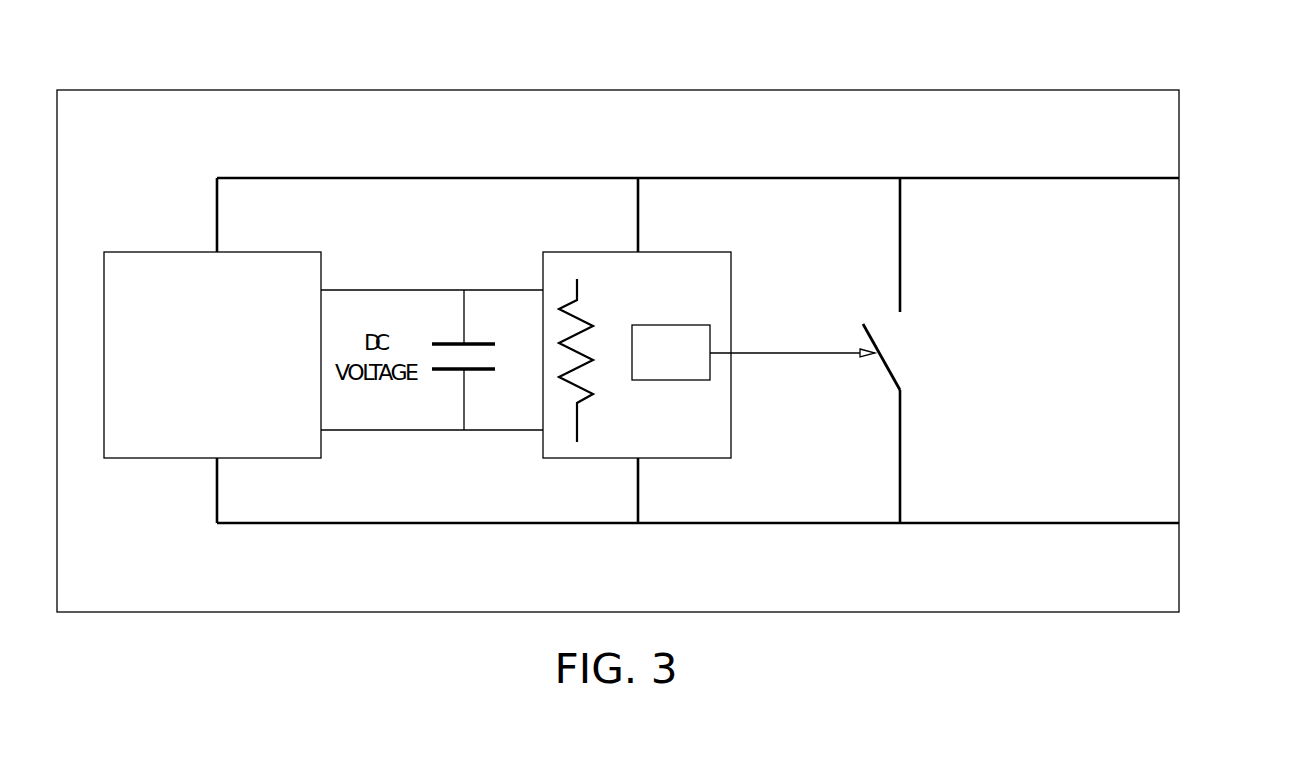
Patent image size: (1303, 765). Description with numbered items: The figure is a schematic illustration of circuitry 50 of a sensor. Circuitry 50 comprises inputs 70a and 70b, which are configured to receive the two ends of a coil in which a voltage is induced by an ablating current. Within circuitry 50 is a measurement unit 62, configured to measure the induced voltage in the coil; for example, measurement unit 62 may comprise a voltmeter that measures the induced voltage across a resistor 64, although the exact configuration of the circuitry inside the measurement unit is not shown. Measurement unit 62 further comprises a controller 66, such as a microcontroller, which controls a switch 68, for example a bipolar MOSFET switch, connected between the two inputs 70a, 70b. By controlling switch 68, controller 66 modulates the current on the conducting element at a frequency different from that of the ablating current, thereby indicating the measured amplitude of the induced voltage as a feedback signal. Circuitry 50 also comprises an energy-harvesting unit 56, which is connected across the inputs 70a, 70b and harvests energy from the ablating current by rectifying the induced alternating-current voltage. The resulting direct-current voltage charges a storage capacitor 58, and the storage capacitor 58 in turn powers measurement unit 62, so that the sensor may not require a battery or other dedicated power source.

The circuitry 50 is at (483, 90).
The energy-harvesting unit 56 is at (157, 252).
The storage capacitor 58 is at (453, 372).
The measurement unit 62 is at (580, 252).
The resistor 64 is at (586, 318).
The controller 66 is at (672, 325).
The switch 68 is at (885, 370).
The input 70a is at (1179, 178).
The input 70b is at (1179, 523).